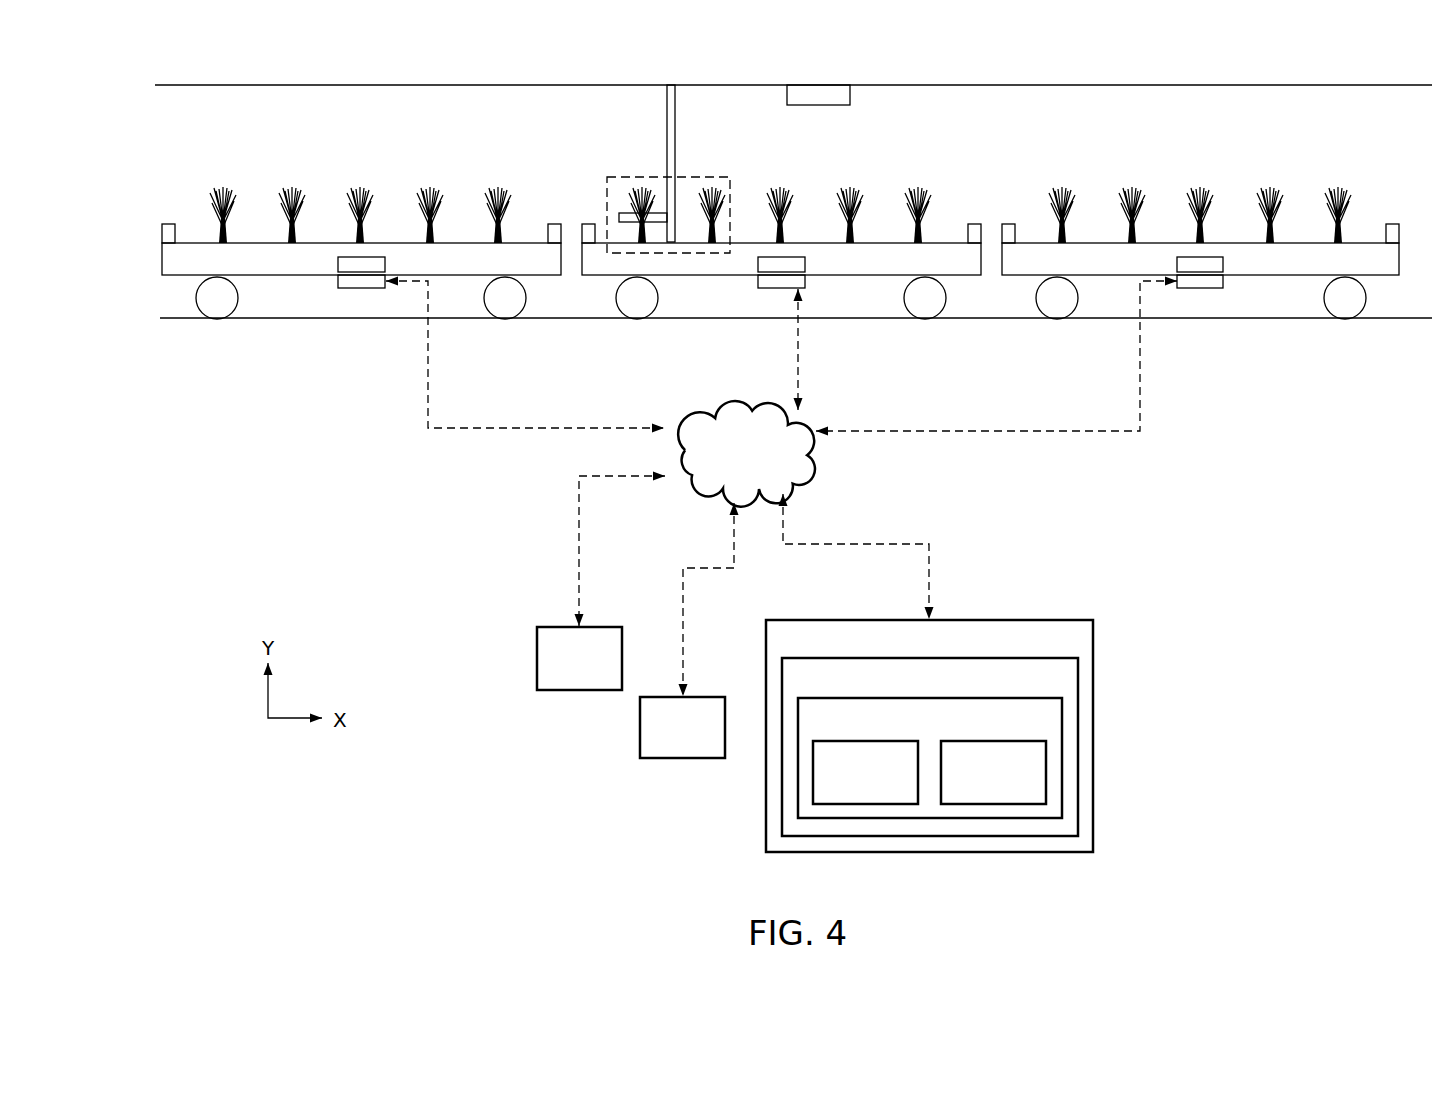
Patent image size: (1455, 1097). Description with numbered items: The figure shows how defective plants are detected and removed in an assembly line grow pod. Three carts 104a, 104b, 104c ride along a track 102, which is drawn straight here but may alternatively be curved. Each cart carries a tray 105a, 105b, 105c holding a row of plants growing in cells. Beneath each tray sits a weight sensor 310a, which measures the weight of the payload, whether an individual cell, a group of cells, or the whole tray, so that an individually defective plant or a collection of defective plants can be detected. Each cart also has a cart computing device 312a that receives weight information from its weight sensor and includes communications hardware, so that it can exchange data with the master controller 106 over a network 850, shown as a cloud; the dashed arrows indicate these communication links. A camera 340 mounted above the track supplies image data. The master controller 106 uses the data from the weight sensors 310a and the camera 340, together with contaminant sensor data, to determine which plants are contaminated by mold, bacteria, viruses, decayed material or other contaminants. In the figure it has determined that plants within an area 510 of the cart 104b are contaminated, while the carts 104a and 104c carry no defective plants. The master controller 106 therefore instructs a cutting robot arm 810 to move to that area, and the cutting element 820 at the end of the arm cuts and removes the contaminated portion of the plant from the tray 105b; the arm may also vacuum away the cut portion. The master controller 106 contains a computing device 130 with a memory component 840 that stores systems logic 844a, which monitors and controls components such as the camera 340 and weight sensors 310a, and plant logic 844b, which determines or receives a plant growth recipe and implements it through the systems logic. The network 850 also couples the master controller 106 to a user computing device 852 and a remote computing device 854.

The track 102 is at (765, 201).
The cart 104a is at (1222, 290).
The cart 104b is at (754, 294).
The cart 104c is at (334, 294).
The tray 105a is at (1248, 187).
The tray 105b is at (849, 194).
The tray 105c is at (295, 205).
The weight sensor 310a is at (337, 262).
The cart computing device 312a is at (779, 325).
The camera 340 is at (876, 115).
The area 510 is at (642, 177).
The cutting robot arm 810 is at (724, 163).
The cutting element 820 is at (591, 185).
The network 850 is at (765, 467).
The user computing device 852 is at (537, 660).
The remote computing device 854 is at (640, 727).
The master controller 106 is at (1093, 652).
The computing device 130 is at (1078, 700).
The memory component 840 is at (1062, 765).
The systems logic 844a is at (863, 805).
The plant logic 844b is at (990, 805).